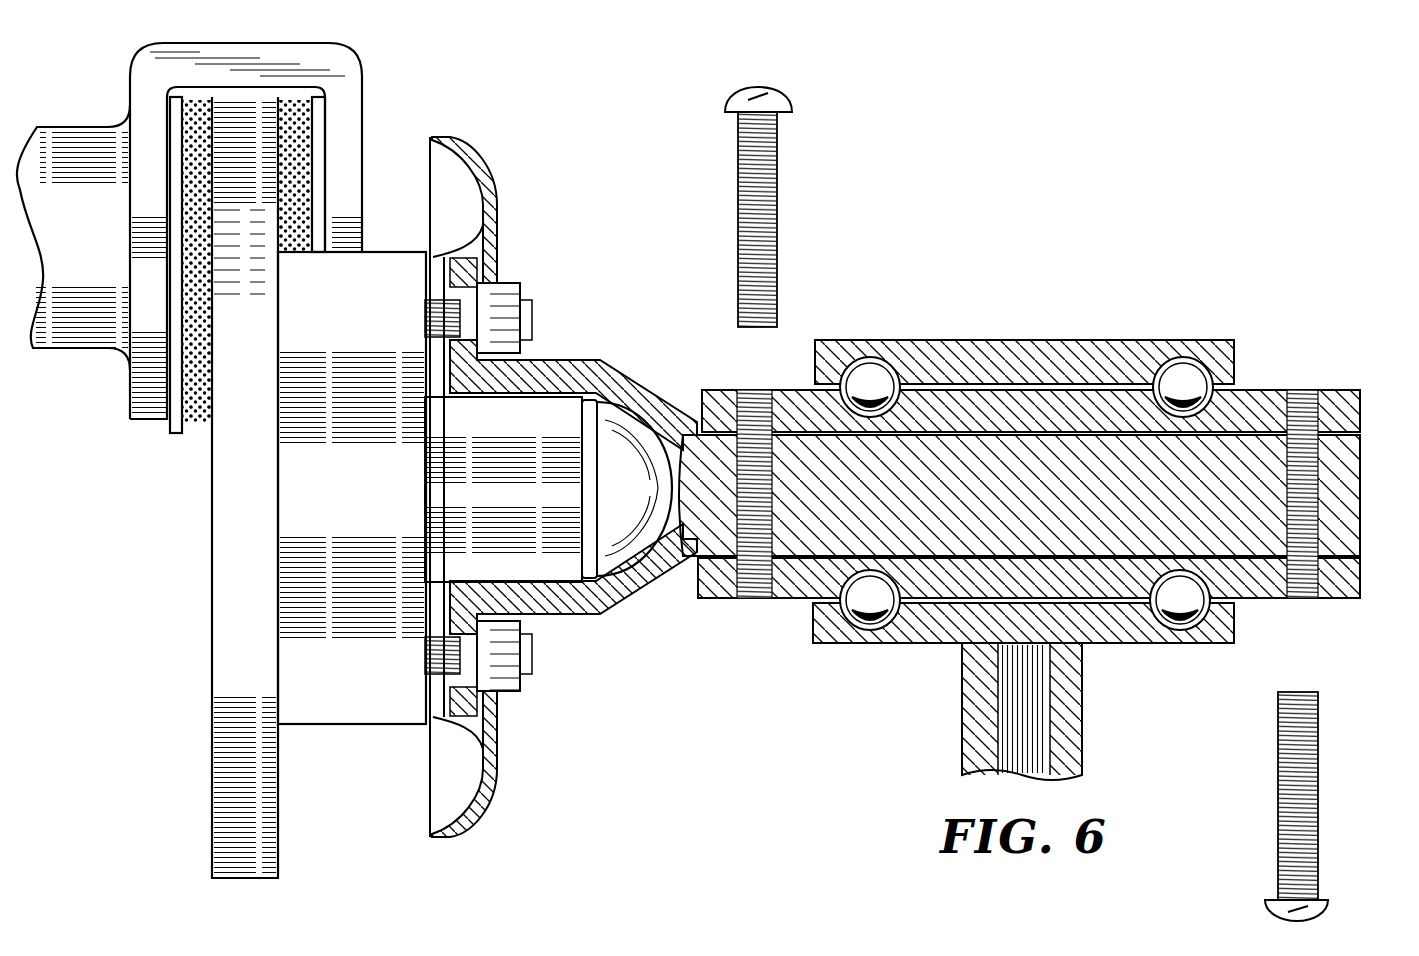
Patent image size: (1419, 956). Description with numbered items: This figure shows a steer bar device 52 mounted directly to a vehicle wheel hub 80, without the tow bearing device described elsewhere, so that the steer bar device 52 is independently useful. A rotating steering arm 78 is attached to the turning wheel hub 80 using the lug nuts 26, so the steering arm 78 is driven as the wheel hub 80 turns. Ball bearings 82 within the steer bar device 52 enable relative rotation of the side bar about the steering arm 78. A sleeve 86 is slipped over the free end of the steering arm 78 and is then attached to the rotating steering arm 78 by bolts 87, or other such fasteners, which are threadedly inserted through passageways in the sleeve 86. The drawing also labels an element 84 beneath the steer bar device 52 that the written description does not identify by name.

The lug nuts 26 is at (515, 288).
The steer bar device 52 is at (830, 327).
The rotating steering arm 78 is at (1340, 496).
The wheel hub 80 is at (568, 405).
The ball bearings 82 is at (878, 365).
The mounting post 84 is at (1068, 703).
The sleeve 86 is at (1336, 396).
The bolts 87 is at (738, 170).